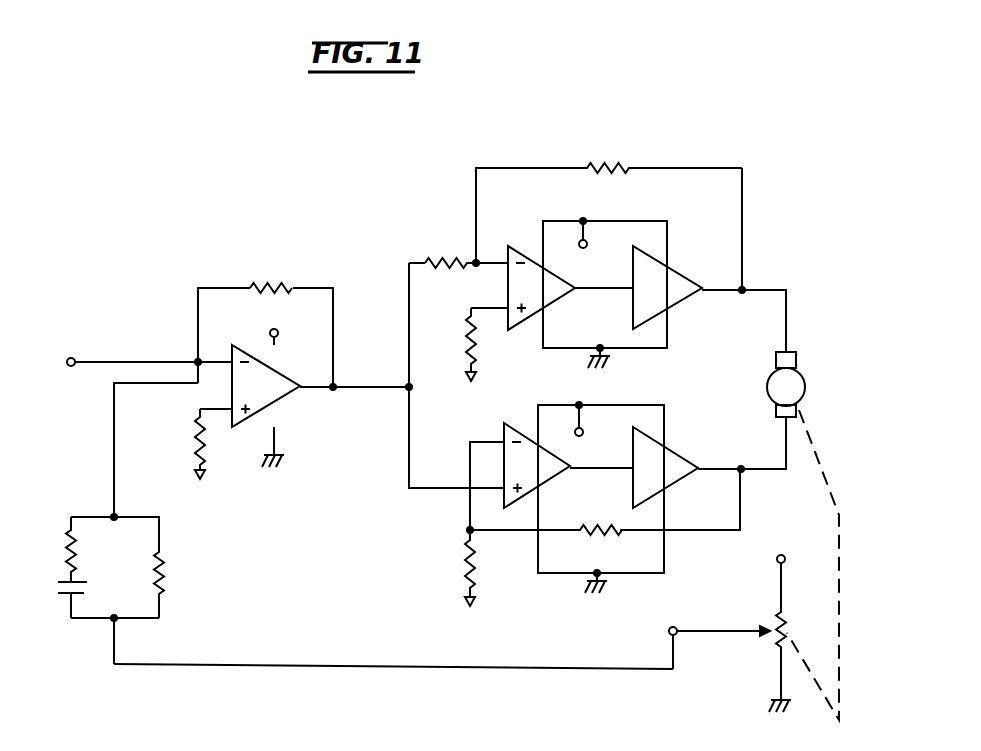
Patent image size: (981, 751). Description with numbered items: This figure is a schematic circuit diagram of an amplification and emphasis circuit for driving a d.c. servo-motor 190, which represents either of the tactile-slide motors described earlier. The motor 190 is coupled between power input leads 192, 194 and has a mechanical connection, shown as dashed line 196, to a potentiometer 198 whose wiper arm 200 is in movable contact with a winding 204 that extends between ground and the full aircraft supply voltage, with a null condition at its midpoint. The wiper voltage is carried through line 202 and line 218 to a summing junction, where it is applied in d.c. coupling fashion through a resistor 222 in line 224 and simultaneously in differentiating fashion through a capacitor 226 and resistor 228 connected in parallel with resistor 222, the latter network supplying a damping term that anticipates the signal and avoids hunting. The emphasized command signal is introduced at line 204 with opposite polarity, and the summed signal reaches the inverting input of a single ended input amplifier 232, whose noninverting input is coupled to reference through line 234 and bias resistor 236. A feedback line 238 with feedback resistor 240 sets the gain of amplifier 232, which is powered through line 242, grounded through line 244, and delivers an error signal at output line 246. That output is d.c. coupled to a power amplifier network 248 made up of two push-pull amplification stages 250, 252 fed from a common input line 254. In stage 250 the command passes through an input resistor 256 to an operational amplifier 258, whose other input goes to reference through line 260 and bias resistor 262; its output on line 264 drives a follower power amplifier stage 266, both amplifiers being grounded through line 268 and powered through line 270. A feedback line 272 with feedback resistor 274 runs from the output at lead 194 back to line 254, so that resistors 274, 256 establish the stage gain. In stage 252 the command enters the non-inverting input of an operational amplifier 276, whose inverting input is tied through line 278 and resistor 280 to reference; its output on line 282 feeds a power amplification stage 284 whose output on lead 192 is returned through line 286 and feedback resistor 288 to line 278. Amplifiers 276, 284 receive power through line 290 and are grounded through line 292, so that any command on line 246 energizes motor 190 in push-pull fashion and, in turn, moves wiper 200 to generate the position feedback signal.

The d.c. servo-motor 190 is at (808, 378).
The power input lead 192 is at (788, 455).
The power input lead 194 is at (786, 308).
The mechanical connection 196 is at (839, 550).
The potentiometer 198 is at (737, 667).
The wiper arm 200 is at (719, 631).
The line 202 is at (316, 666).
The winding 204 is at (76, 358).
The line 218 is at (114, 437).
The resistor 222 is at (166, 567).
The line 224 is at (156, 618).
The capacitor 226 is at (58, 590).
The resistor 228 is at (65, 553).
The single ended input amplifier 232 is at (249, 350).
The line 234 is at (214, 409).
The bias resistor 236 is at (195, 446).
The feedback line 238 is at (320, 288).
The feedback resistor 240 is at (272, 282).
The line 242 is at (277, 352).
The line 244 is at (283, 440).
The output line 246 is at (358, 388).
The power amplifier network 248 is at (613, 85).
The amplification stage 250 is at (545, 147).
The amplification stage 252 is at (513, 588).
The input line 254 is at (409, 328).
The input resistor 256 is at (440, 259).
The operational amplifier 258 is at (524, 245).
The line 260 is at (487, 308).
The bias resistor 262 is at (476, 346).
The line 264 is at (608, 290).
The follower power amplifier stage 266 is at (671, 272).
The line 268 is at (640, 348).
The line 270 is at (608, 221).
The feedback line 272 is at (743, 210).
The feedback resistor 274 is at (612, 168).
The operational amplifier 276 is at (514, 433).
The line 278 is at (470, 512).
The resistor 280 is at (466, 570).
The line 282 is at (583, 468).
The power amplification stage 284 is at (678, 452).
The line 286 is at (740, 530).
The feedback resistor 288 is at (599, 528).
The line 290 is at (591, 405).
The line 292 is at (573, 576).